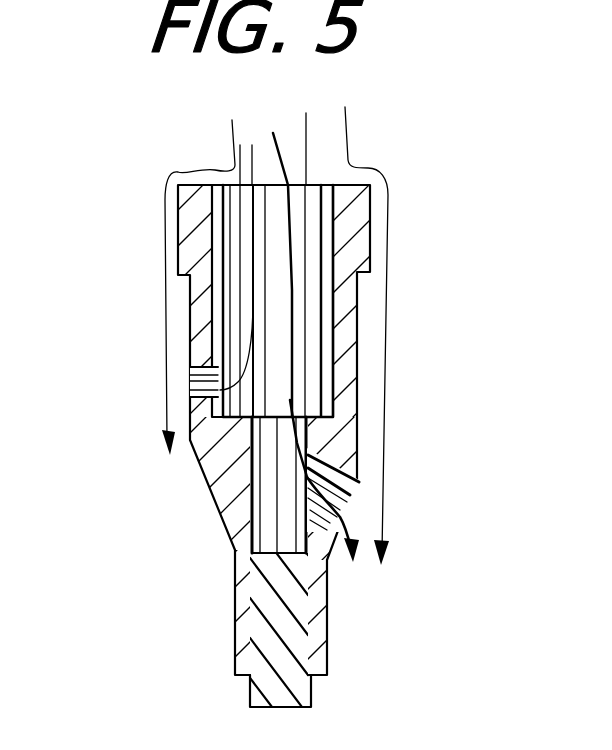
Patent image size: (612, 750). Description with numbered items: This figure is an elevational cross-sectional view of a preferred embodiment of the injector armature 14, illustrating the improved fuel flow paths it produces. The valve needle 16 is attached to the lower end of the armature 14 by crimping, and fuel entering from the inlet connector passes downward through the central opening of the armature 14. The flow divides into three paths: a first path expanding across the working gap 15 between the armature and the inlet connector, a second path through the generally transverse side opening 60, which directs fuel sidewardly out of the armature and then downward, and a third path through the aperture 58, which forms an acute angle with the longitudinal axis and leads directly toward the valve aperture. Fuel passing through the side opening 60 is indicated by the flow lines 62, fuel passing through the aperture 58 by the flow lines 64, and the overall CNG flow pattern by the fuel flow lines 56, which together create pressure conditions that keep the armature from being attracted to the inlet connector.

The armature 14 is at (336, 307).
The working gap 15 is at (317, 227).
The valve needle 16 is at (300, 683).
The fuel flow lines 56 is at (190, 180).
The aperture 58 is at (313, 477).
The side opening 60 is at (212, 363).
The flow lines 62 is at (167, 428).
The flow lines 64 is at (335, 525).